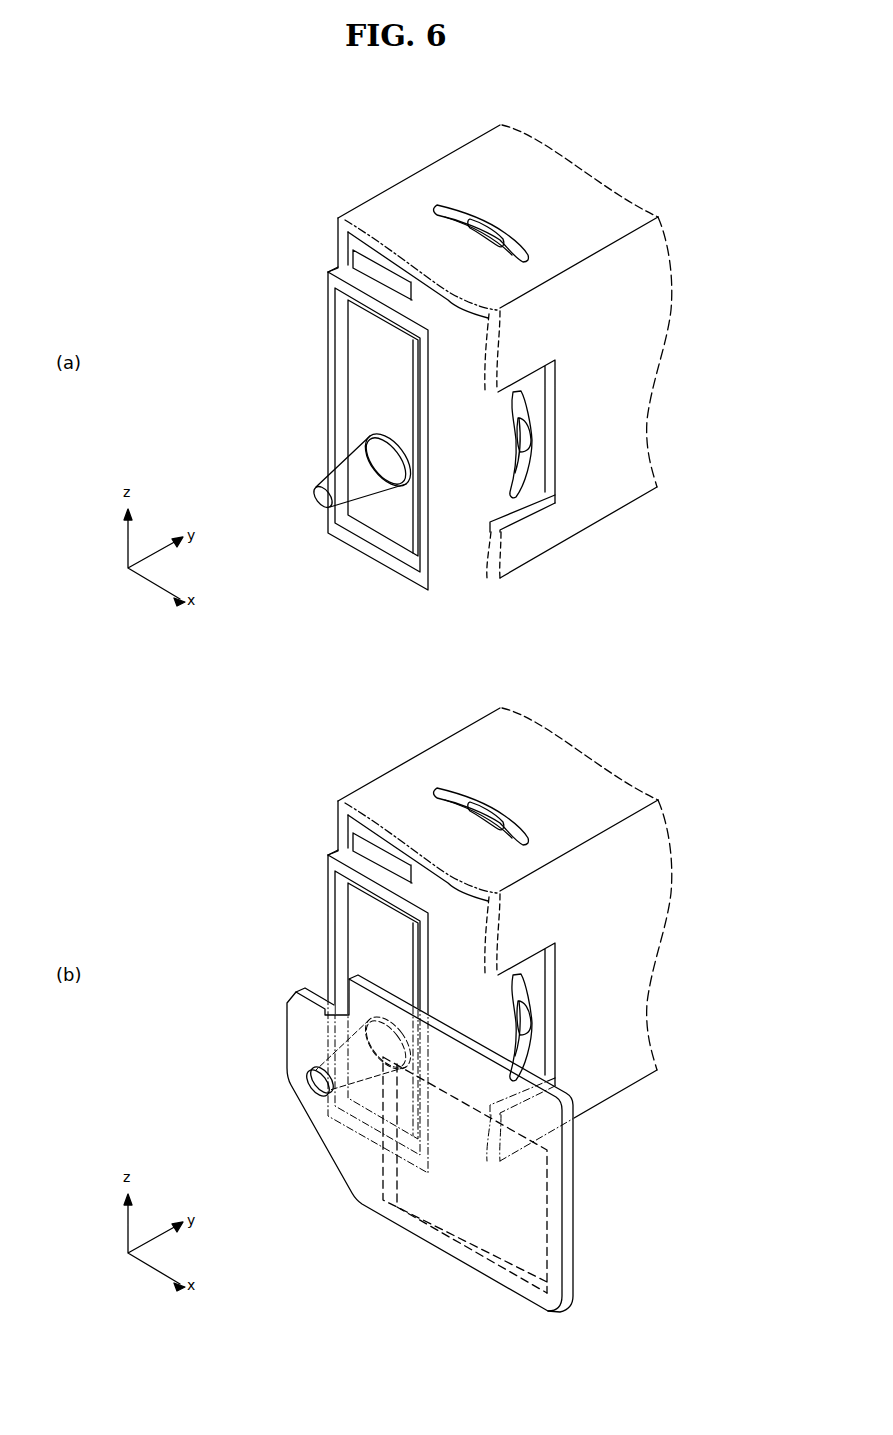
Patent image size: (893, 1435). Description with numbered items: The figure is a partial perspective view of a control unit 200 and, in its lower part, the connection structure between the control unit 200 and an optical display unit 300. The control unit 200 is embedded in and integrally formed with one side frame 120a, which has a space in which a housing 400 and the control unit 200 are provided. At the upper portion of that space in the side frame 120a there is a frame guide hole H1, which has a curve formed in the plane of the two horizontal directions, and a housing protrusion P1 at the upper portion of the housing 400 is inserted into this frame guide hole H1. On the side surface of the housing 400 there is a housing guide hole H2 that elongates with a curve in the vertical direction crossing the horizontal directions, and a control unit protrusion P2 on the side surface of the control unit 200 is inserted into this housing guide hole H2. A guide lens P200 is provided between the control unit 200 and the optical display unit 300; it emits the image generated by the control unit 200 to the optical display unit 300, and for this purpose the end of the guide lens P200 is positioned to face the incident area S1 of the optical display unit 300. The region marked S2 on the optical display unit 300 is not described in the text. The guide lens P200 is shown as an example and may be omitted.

The side frame 120a is at (662, 299).
The housing 400 is at (330, 373).
The control unit 200 is at (357, 405).
The guide lens P200 is at (315, 497).
The housing protrusion P1 is at (493, 221).
The frame guide hole H1 is at (520, 245).
The control unit protrusion P2 is at (530, 433).
The housing guide hole H2 is at (522, 468).
The optical display unit 300 is at (357, 1200).
The incident area S1 is at (318, 1095).
The second slot of plate S2 is at (466, 1247).